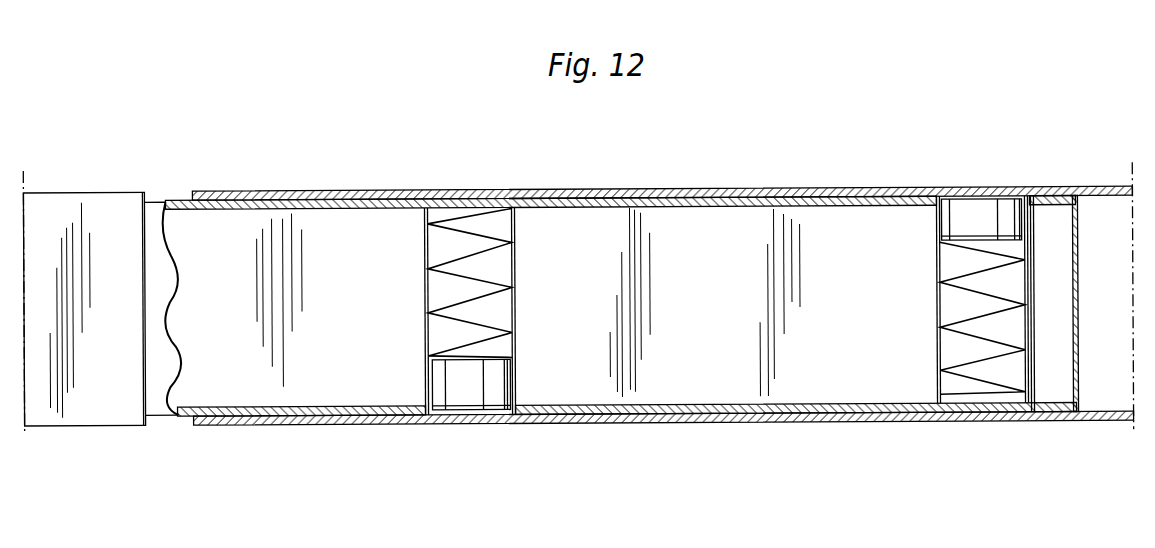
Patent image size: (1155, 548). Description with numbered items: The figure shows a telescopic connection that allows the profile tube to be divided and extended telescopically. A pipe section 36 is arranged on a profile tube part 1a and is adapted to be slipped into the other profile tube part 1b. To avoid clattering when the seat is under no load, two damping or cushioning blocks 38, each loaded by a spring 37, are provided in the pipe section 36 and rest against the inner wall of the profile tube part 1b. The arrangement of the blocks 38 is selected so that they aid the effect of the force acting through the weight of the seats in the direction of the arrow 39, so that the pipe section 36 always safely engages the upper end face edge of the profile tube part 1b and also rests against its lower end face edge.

The profile tube part 1a is at (80, 408).
The profile tube part 1b is at (325, 420).
The pipe section 36 is at (165, 404).
The spring 37 is at (492, 284).
The damping block 38 is at (500, 377).
The arrow 39 is at (342, 146).